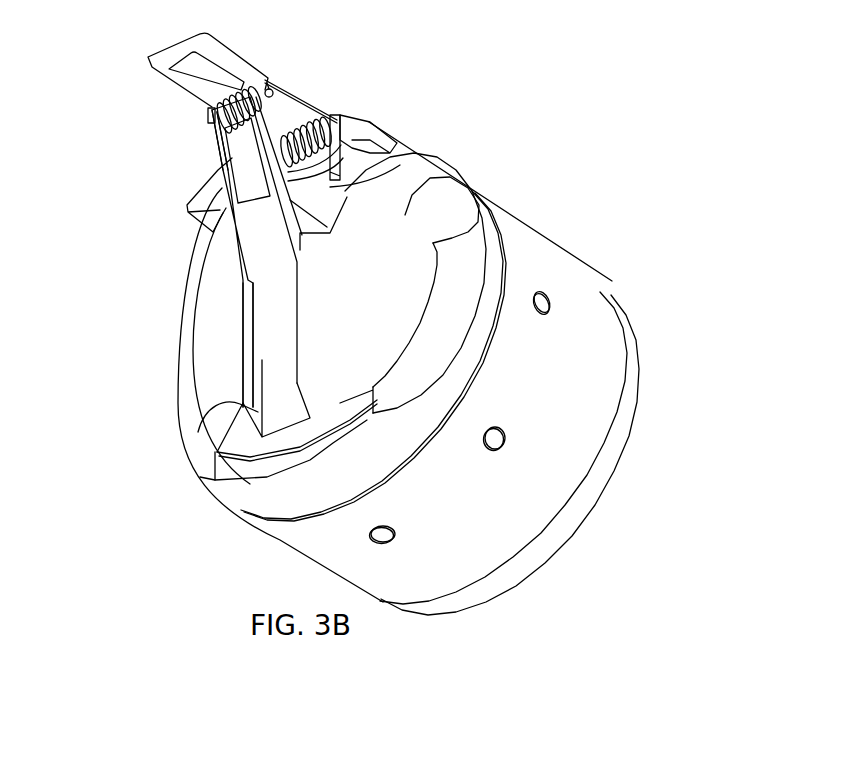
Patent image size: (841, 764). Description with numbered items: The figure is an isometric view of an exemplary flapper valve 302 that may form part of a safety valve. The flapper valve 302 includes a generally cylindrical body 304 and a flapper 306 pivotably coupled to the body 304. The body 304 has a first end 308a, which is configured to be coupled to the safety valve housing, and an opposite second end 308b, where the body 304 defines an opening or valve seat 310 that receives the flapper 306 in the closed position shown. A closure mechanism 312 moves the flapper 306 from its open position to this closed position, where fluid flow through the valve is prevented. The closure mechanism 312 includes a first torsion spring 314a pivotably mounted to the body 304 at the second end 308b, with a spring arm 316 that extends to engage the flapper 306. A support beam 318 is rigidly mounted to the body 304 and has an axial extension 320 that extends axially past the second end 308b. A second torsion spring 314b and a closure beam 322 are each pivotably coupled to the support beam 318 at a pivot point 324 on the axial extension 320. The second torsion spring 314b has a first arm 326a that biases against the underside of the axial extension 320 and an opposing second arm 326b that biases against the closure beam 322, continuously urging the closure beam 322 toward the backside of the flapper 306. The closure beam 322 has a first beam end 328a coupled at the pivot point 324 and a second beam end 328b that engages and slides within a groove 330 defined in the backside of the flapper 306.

The flapper valve 302 is at (535, 201).
The body 304 is at (584, 262).
The flapper 306 is at (453, 175).
The first end 308a is at (637, 438).
The second end 308b is at (166, 406).
The valve seat 310 is at (477, 185).
The closure mechanism 312 is at (343, 64).
The first torsion spring 314a is at (333, 114).
The second torsion spring 314b is at (207, 116).
The spring arm 316 is at (399, 150).
The support beam 318 is at (303, 99).
The axial extension 320 is at (167, 56).
The closure beam 322 is at (200, 274).
The pivot point 324 is at (271, 89).
The first arm 326a is at (221, 67).
The second arm 326b is at (233, 163).
The first beam end 328a is at (202, 137).
The second beam end 328b is at (234, 360).
The groove 330 is at (250, 402).